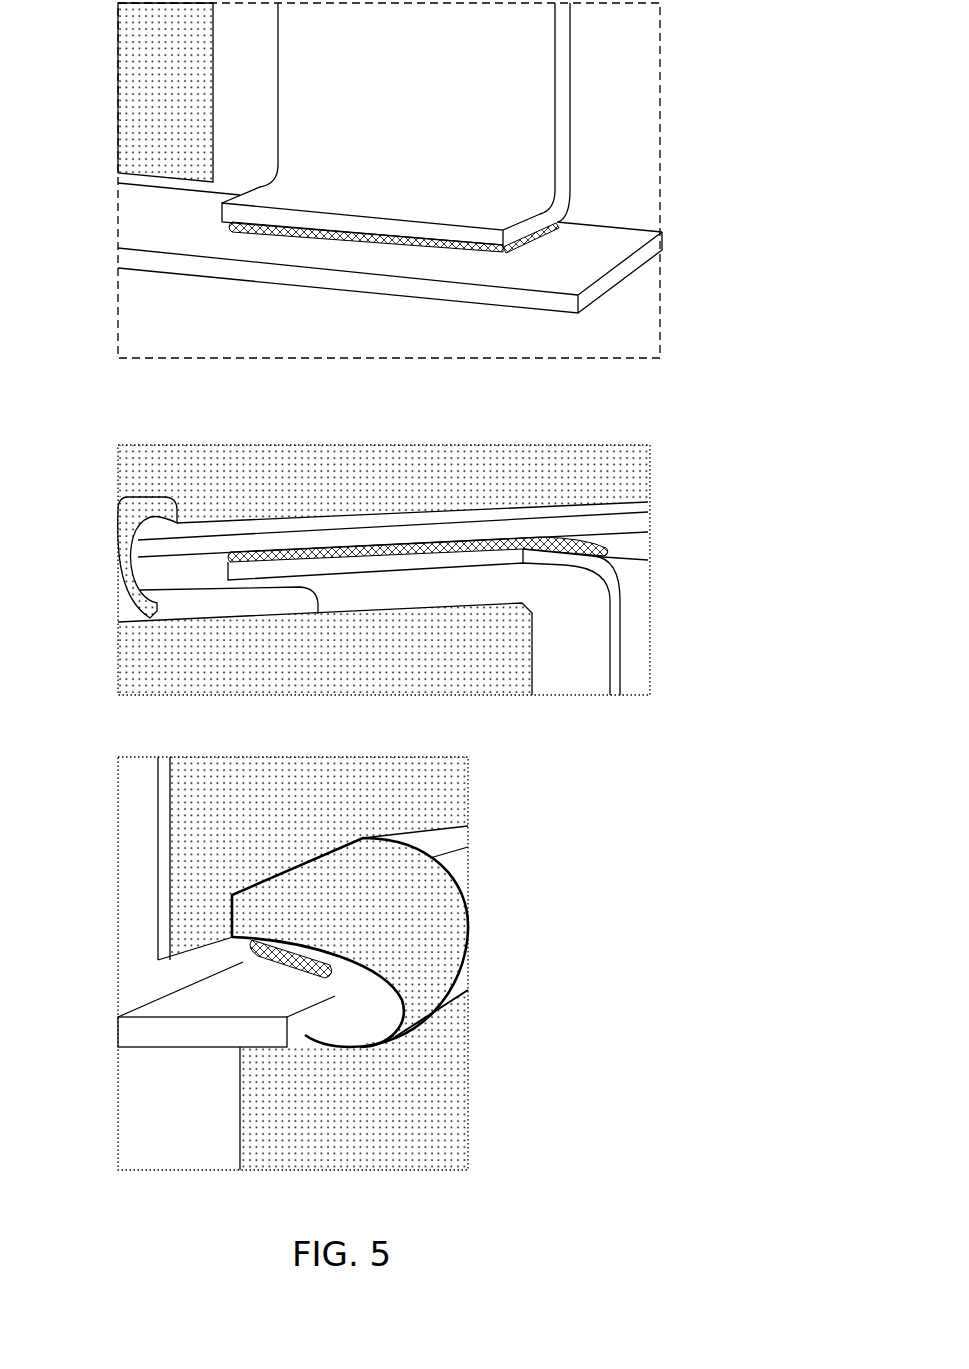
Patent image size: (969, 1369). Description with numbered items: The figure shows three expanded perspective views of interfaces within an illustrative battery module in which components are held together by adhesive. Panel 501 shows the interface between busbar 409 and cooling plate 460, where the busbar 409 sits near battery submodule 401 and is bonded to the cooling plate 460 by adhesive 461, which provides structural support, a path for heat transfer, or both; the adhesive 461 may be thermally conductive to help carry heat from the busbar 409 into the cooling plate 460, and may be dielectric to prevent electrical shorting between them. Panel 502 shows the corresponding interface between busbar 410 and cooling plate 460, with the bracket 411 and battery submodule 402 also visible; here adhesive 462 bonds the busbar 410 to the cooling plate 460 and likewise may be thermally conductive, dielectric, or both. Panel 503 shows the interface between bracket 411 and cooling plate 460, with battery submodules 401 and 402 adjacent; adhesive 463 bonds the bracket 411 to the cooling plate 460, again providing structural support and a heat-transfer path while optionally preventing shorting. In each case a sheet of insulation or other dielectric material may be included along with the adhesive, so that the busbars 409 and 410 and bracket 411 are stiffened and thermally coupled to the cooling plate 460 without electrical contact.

The battery submodule 401 is at (646, 137).
The battery submodule 402 is at (634, 342).
The busbar 409 is at (433, 92).
The busbar 410 is at (588, 641).
The bracket 411 is at (176, 106).
The cooling plate 460 is at (588, 277).
The adhesive 461 is at (230, 233).
The adhesive 462 is at (607, 542).
The adhesive 463 is at (247, 950).
The panel 501 is at (670, 70).
The panel 502 is at (660, 472).
The panel 503 is at (480, 1055).